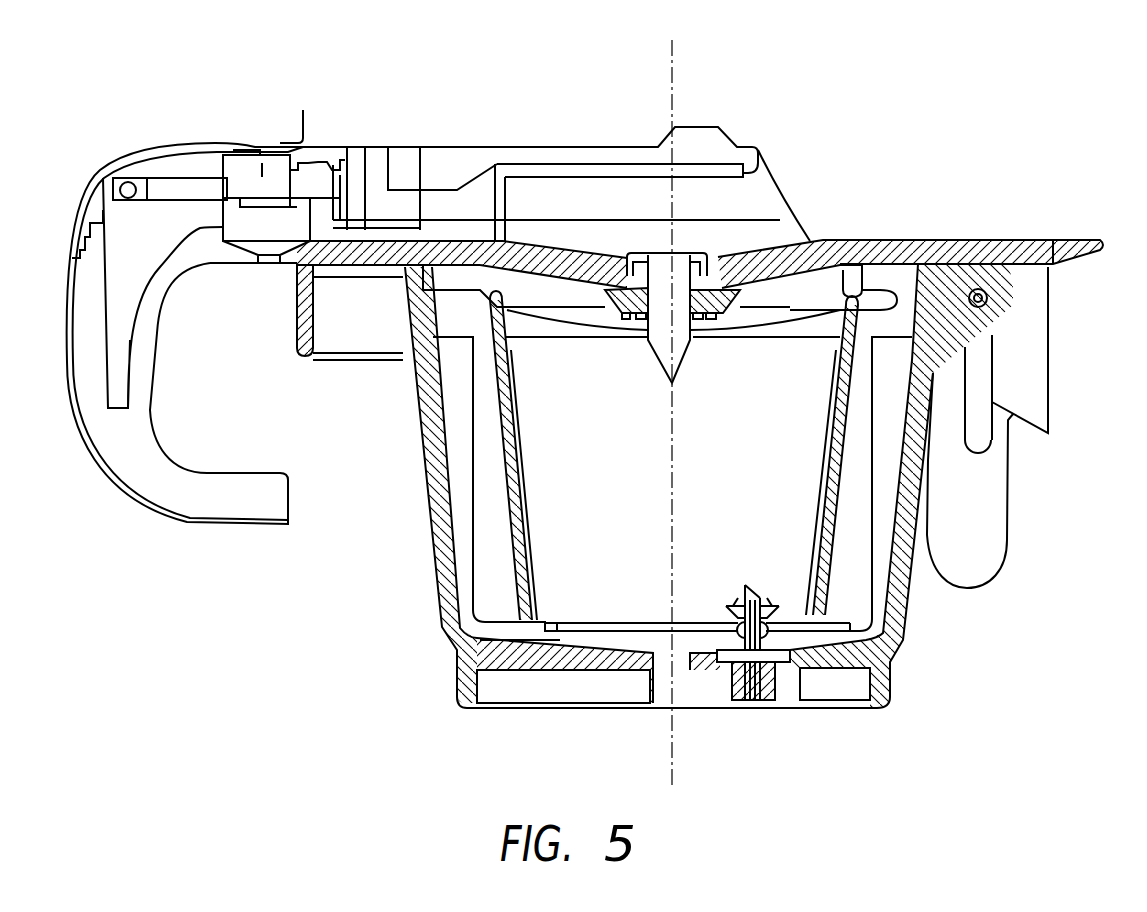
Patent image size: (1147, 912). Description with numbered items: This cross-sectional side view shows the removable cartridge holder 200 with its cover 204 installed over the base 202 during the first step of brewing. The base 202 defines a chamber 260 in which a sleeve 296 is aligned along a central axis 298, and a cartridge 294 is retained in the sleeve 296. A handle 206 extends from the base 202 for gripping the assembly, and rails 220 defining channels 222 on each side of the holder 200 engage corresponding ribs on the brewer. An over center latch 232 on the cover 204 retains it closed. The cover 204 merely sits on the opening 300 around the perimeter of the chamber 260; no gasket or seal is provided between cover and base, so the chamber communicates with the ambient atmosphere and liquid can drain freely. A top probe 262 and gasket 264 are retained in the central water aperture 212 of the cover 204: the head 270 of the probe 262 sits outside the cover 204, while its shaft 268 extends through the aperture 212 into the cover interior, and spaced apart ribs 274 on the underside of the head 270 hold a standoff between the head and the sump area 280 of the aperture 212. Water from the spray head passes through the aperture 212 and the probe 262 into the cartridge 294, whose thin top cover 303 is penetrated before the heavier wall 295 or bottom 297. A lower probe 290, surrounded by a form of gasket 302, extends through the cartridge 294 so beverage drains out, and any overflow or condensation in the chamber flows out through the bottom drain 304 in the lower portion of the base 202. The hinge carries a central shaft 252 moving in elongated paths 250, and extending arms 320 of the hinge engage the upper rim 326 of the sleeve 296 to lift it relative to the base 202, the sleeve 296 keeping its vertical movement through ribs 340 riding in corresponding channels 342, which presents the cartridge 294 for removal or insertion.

The holder 200 is at (1042, 515).
The base 202 is at (425, 515).
The cover 204 is at (457, 240).
The handle 206 is at (210, 513).
The water aperture 212 is at (716, 272).
The rails 220 is at (718, 270).
The channels 222 is at (747, 198).
The latch 232 is at (1080, 241).
The elongated paths 250 is at (978, 433).
The central shaft 252 is at (990, 298).
The chamber 260 is at (848, 568).
The top probe 262 is at (648, 244).
The gasket 264 is at (720, 312).
The shaft 268 is at (682, 347).
The head 270 is at (663, 262).
The spaced apart ribs 274 is at (625, 268).
The sump area 280 is at (612, 287).
The lower probe 290 is at (740, 590).
The cartridge 294 is at (545, 483).
The wall 295 is at (518, 575).
The sleeve 296 is at (500, 410).
The base of cartridge 297 is at (632, 623).
The axis 298 is at (672, 492).
The opening 300 is at (405, 265).
The gasket 302 is at (776, 632).
The top cover of cartridge 303 is at (787, 320).
The bottom drain 304 is at (682, 685).
The extending arms 320 is at (982, 565).
The upper rim 326 is at (897, 302).
The ribs 340 is at (485, 470).
The channels 342 is at (475, 383).